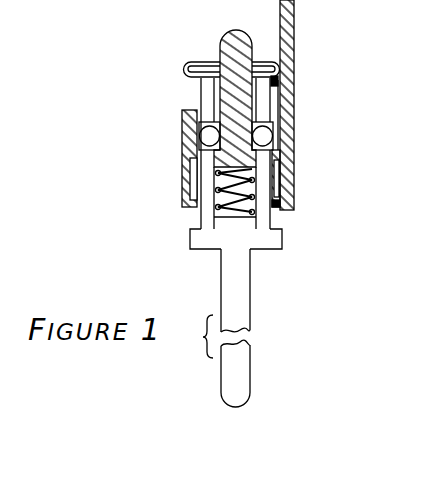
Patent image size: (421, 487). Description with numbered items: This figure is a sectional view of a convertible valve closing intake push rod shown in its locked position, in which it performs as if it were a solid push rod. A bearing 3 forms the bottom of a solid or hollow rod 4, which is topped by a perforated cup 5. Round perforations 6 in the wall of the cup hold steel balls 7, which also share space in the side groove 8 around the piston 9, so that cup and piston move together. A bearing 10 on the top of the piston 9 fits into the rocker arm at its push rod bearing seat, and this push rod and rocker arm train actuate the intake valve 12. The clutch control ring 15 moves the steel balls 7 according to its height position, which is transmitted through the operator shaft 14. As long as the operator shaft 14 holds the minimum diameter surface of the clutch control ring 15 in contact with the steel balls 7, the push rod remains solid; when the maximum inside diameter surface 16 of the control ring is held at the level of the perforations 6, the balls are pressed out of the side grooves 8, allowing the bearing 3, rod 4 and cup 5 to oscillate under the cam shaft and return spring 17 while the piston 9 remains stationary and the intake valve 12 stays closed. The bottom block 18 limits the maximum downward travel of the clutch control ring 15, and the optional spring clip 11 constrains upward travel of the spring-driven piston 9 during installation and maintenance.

The bearing 3 is at (221, 371).
The rod 4 is at (221, 283).
The perforated cup 5 is at (198, 214).
The perforations 6 is at (195, 158).
The steel balls 7 is at (200, 130).
The side groove 8 is at (201, 99).
The piston 9 is at (213, 122).
The bearing 10 is at (229, 38).
The spring clip 11 is at (266, 62).
The intake valve 12 is at (258, 103).
The operator shaft 14 is at (294, 43).
The clutch control ring 15 is at (292, 113).
The maximum inside diameter surface 16 is at (273, 165).
The return spring 17 is at (256, 213).
The bottom block 18 is at (283, 239).